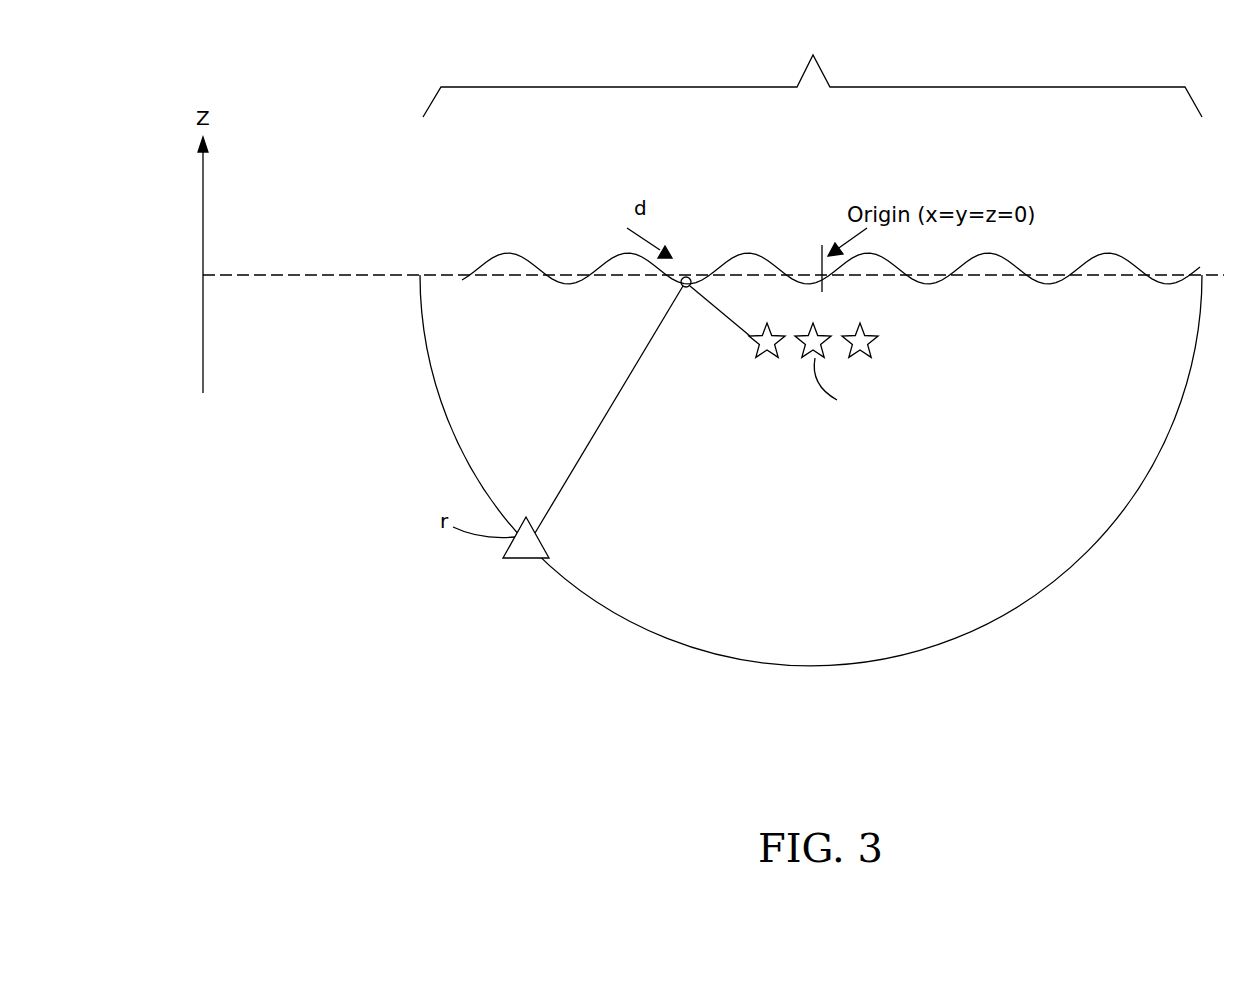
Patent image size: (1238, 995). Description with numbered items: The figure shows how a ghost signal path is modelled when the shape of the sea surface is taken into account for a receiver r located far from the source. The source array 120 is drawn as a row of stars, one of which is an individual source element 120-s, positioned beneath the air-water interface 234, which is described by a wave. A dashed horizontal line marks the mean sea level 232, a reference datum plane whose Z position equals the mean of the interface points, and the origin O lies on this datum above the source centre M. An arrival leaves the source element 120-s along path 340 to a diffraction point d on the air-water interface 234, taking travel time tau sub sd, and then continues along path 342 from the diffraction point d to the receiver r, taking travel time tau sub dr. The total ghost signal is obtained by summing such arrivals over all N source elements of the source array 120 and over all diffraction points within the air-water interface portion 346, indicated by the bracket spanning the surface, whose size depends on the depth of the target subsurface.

The air-water interface portion 346 is at (812, 68).
The mean sea level 232 is at (340, 275).
The air-water interface 234 is at (490, 256).
The path 340 is at (712, 304).
The path 342 is at (572, 478).
The source array 120 is at (853, 381).
The source element 120-s is at (772, 358).